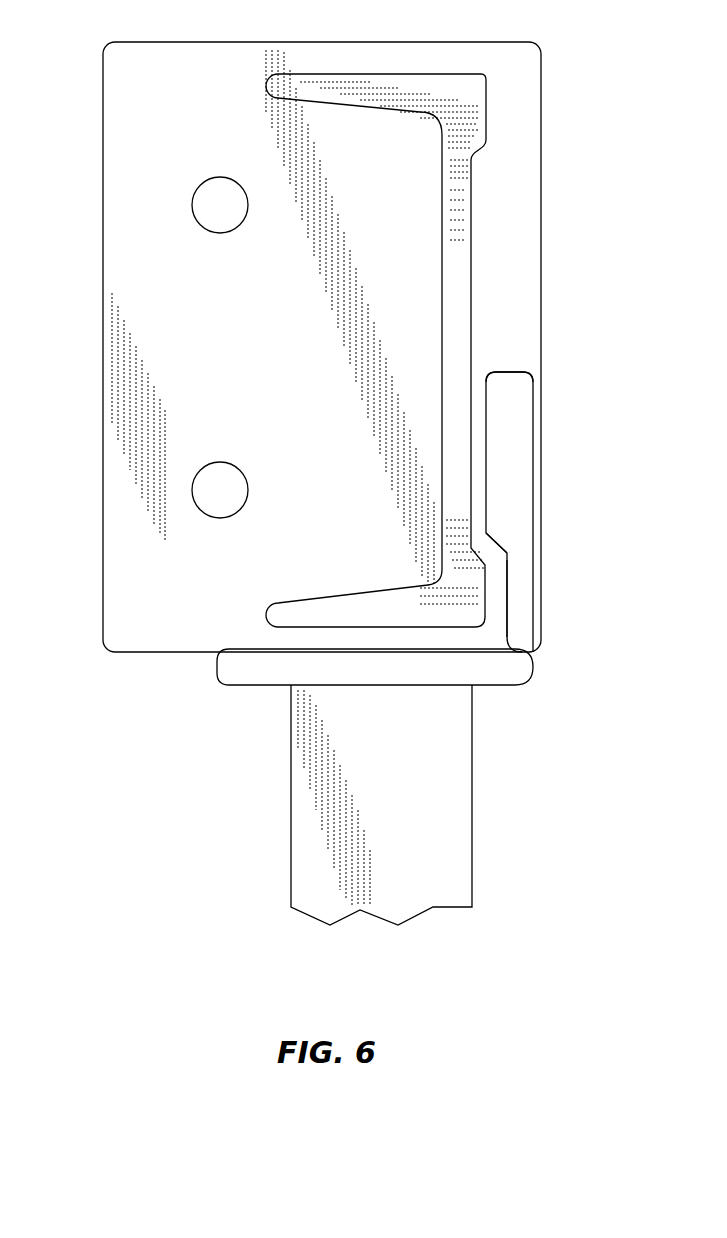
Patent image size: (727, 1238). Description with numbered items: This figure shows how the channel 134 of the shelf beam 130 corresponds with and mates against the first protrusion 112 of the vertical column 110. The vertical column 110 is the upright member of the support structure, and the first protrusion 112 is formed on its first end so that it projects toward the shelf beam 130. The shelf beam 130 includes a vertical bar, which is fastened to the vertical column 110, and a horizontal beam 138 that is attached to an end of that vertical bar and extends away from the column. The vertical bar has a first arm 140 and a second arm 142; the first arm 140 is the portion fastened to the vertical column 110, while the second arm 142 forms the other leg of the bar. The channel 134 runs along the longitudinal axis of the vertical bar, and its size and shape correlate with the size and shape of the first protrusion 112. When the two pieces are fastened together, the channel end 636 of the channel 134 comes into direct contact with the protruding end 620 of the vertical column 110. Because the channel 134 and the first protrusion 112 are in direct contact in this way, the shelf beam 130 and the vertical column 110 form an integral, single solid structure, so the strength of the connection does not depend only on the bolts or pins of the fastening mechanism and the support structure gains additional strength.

The vertical column 110 is at (167, 287).
The first protrusion 112 is at (470, 617).
The shelf beam 130 is at (520, 428).
The channel 134 is at (494, 600).
The horizontal beam 138 is at (450, 825).
The first arm 140 is at (510, 372).
The second arm 142 is at (217, 668).
The protruding end 620 is at (470, 562).
The channel end 636 is at (503, 543).